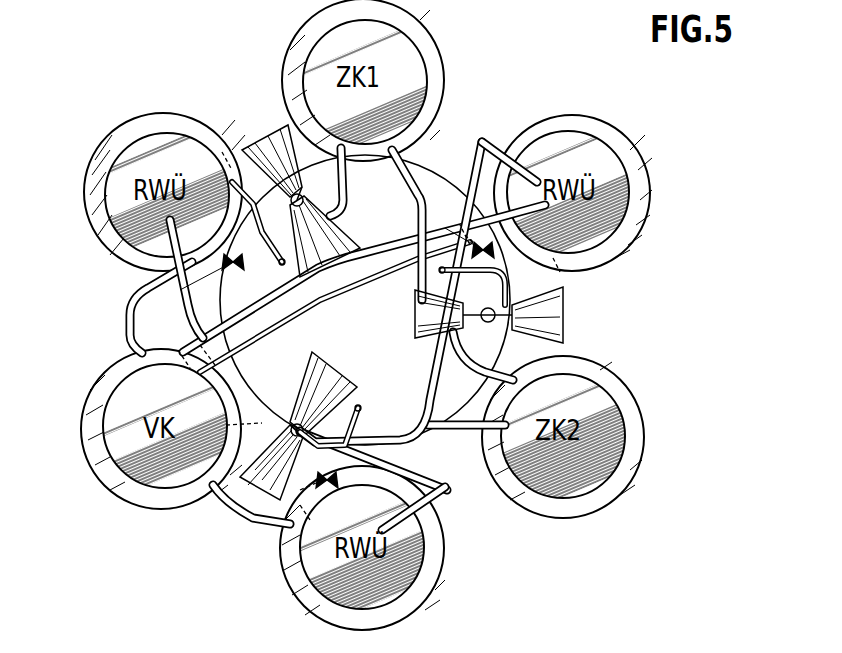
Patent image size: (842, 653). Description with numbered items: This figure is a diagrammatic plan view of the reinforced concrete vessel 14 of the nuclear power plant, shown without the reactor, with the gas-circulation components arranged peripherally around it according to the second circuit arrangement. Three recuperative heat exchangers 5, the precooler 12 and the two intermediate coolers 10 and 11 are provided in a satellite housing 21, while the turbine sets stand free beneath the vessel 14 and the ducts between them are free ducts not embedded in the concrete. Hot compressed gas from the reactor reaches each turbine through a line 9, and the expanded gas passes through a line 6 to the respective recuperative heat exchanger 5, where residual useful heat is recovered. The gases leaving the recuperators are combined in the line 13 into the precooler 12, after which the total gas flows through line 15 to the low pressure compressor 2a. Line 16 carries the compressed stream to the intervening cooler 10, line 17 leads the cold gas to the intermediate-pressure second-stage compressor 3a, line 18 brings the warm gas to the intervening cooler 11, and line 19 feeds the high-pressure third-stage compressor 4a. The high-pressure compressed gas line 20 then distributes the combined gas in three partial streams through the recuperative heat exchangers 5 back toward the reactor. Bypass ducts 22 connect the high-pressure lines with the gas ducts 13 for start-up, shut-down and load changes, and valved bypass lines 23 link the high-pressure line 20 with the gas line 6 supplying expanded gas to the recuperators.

The low pressure compressor 2a is at (342, 268).
The intermediate-pressure second-stage compressor 3a is at (414, 313).
The high-pressure third-stage compressor 4a is at (342, 367).
The recuperative heat exchanger 5 is at (112, 182).
The gas line 6 is at (229, 156).
The gas line 9 is at (278, 266).
The intervening cooler 10 is at (412, 60).
The intervening cooler 11 is at (603, 473).
The precooler 12 is at (110, 445).
The gas line 13 is at (128, 318).
The reinforced concrete vessel 14 is at (505, 345).
The gas line 15 is at (192, 370).
The gas line 16 is at (342, 210).
The gas line 17 is at (413, 187).
The gas line 18 is at (462, 355).
The gas line 19 is at (470, 430).
The high-pressure compressed gas line 20 is at (178, 292).
The satellite housing 21 is at (535, 130).
The bypass duct 22 is at (282, 405).
The valved bypass line 23 is at (236, 262).